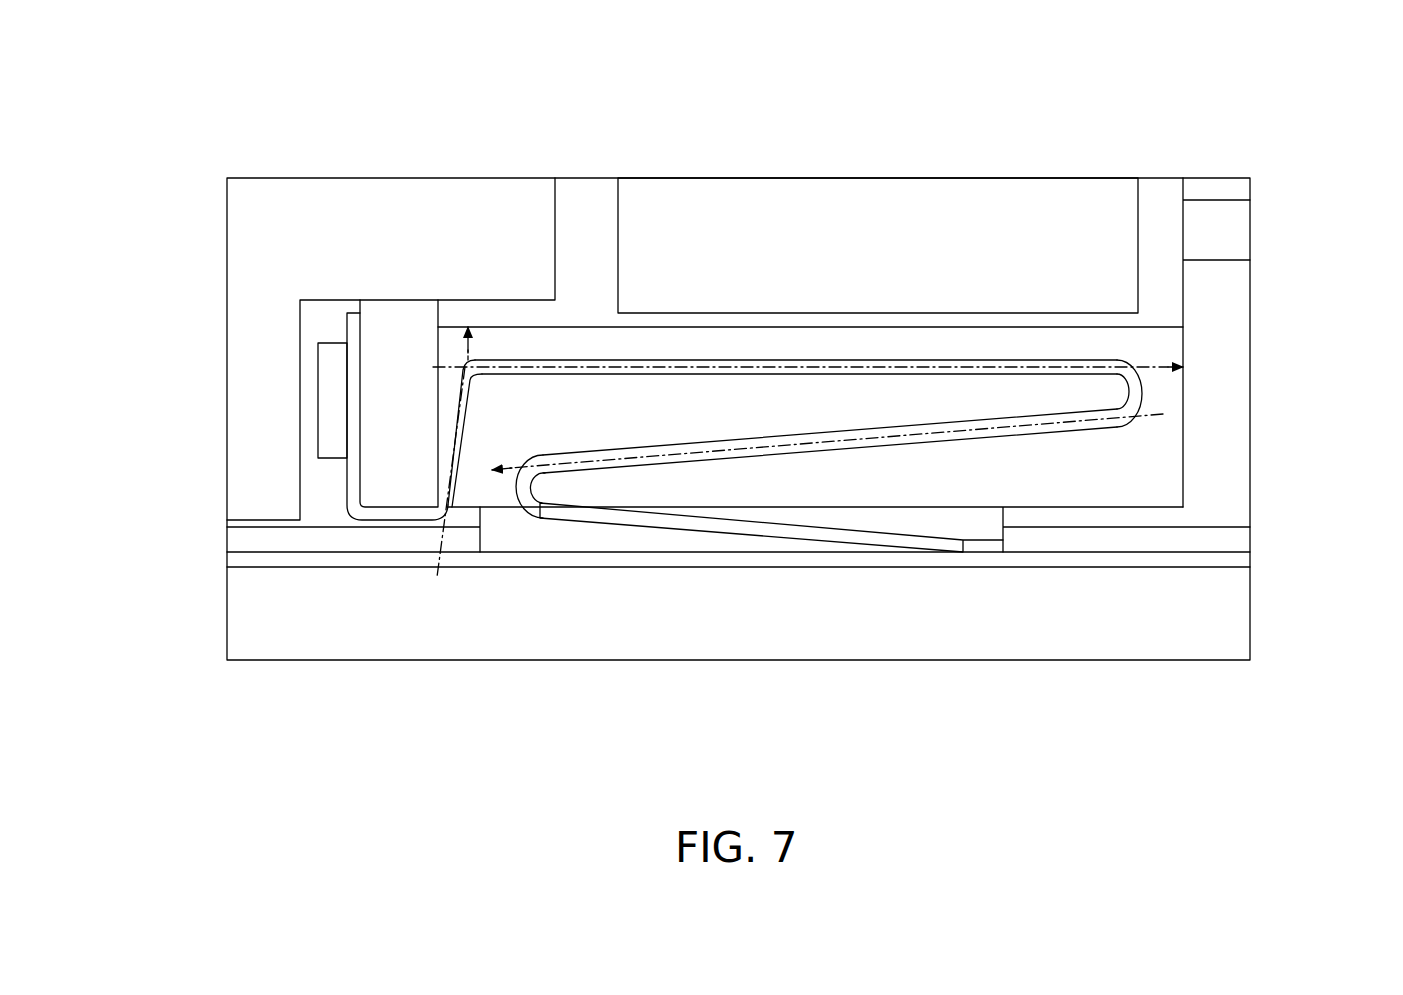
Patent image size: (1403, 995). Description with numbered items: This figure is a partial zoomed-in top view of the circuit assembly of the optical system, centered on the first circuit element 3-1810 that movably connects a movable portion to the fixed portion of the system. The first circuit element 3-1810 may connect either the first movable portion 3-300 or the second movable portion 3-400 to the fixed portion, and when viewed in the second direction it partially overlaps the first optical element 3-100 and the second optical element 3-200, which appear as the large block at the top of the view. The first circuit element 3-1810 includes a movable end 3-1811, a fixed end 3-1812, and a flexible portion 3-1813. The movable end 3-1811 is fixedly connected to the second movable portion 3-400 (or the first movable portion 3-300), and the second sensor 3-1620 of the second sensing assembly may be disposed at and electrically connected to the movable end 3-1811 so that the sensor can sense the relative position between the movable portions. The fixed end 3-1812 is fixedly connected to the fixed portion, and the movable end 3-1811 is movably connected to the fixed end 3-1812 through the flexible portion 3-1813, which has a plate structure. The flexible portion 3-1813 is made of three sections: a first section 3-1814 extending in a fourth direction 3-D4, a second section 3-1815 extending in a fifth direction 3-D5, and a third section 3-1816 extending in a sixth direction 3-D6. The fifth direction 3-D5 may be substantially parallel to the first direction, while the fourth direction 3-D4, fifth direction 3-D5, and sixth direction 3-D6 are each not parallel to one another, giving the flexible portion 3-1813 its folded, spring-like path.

The first optical element 3-100 is at (878, 198).
The second optical element 3-200 is at (735, 232).
The first movable portion 3-300 is at (393, 224).
The second movable portion 3-400 is at (395, 322).
The second sensor 3-1620 is at (328, 401).
The first circuit element 3-1810 is at (736, 472).
The movable end 3-1811 is at (350, 330).
The fixed end 3-1812 is at (985, 548).
The flexible portion 3-1813 is at (904, 437).
The first section 3-1814 is at (1013, 435).
The second section 3-1815 is at (550, 362).
The third section 3-1816 is at (457, 460).
The fourth direction 3-D4 is at (836, 442).
The fifth direction 3-D5 is at (774, 355).
The sixth direction 3-D6 is at (432, 489).